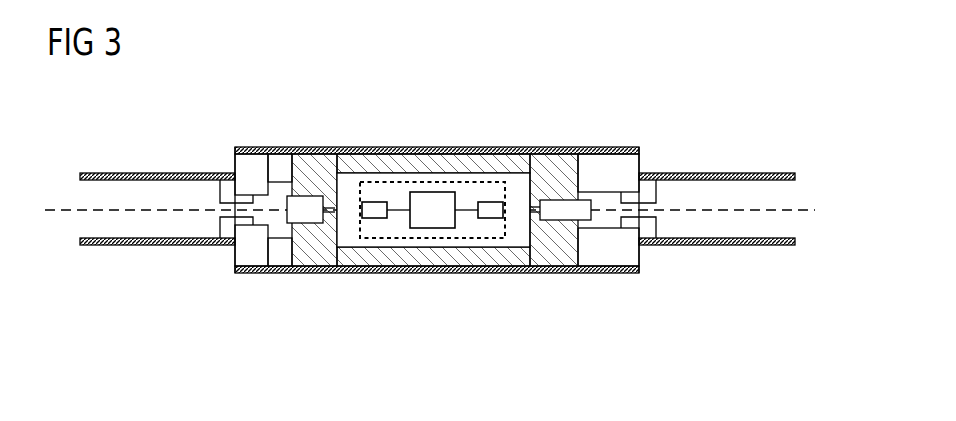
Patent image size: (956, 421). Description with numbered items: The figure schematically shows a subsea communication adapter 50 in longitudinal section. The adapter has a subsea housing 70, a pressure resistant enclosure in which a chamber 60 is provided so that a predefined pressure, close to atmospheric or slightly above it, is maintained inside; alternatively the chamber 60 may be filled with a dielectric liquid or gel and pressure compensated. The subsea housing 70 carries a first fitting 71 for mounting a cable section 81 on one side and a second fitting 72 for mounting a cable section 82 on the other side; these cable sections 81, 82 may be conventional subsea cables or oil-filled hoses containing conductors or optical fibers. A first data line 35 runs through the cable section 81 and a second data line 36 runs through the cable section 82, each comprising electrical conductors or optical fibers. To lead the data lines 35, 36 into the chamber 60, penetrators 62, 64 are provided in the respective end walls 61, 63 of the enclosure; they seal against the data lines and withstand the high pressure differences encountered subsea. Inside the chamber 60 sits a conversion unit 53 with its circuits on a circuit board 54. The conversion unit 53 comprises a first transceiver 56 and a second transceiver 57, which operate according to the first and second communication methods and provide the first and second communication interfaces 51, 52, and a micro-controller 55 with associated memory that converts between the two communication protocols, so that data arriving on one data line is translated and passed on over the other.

The first data line 35 is at (70, 203).
The second data line 36 is at (808, 207).
The subsea communication adapter 50 is at (456, 300).
The first communication interface 51 is at (362, 219).
The second communication interface 52 is at (508, 213).
The conversion unit 53 is at (400, 181).
The circuit board 54 is at (470, 190).
The micro-controller 55 is at (432, 191).
The first transceiver 56 is at (357, 182).
The second transceiver 57 is at (497, 190).
The chamber 60 is at (347, 167).
The first end wall 61 is at (317, 163).
The first penetrator 62 is at (304, 197).
The second end wall 63 is at (547, 163).
The second penetrator 64 is at (553, 199).
The subsea housing 70 is at (279, 280).
The first fitting 71 is at (230, 169).
The second fitting 72 is at (648, 167).
The first cable section 81 is at (87, 247).
The second cable section 82 is at (787, 247).